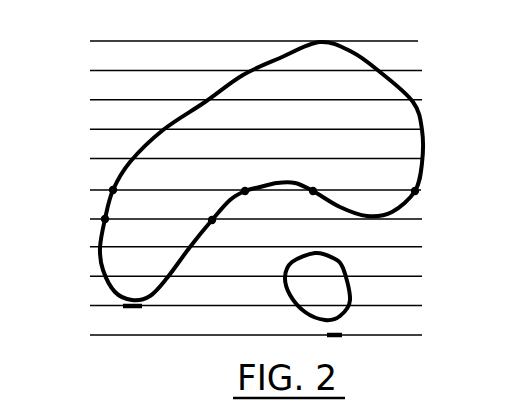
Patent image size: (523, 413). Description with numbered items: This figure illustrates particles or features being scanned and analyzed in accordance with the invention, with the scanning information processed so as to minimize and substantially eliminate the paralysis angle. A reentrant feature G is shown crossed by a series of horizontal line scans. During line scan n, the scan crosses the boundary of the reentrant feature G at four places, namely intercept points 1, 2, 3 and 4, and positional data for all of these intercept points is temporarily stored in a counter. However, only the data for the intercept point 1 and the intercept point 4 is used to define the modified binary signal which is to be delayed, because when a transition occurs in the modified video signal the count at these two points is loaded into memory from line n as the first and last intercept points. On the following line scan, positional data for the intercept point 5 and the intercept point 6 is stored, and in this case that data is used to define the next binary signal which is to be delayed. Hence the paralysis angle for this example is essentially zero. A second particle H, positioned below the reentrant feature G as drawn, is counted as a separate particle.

The intercept point 1 is at (111, 179).
The intercept point 2 is at (239, 181).
The intercept point 3 is at (315, 181).
The intercept point 4 is at (425, 182).
The intercept point 5 is at (97, 209).
The intercept point 6 is at (207, 210).
The line scan n is at (104, 188).
The reentrant feature G is at (261, 171).
The second particle H is at (317, 286).